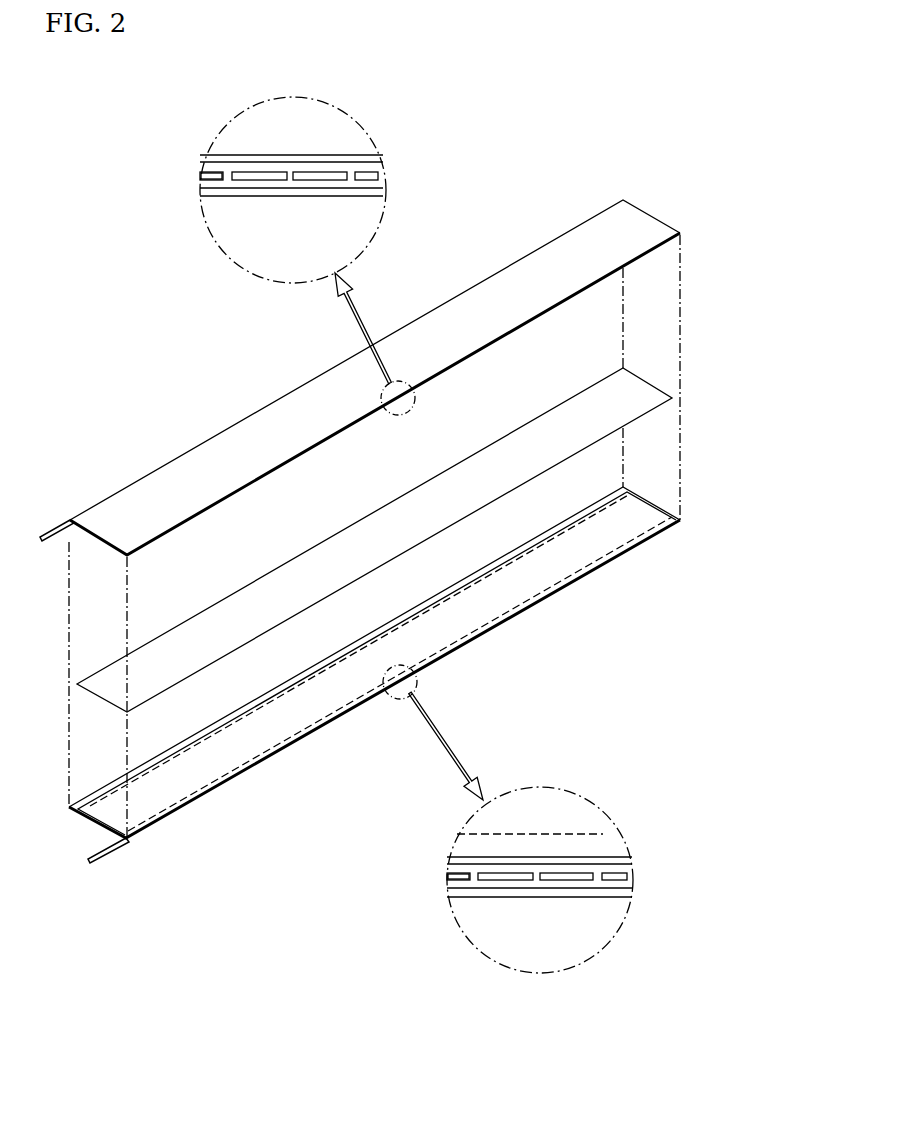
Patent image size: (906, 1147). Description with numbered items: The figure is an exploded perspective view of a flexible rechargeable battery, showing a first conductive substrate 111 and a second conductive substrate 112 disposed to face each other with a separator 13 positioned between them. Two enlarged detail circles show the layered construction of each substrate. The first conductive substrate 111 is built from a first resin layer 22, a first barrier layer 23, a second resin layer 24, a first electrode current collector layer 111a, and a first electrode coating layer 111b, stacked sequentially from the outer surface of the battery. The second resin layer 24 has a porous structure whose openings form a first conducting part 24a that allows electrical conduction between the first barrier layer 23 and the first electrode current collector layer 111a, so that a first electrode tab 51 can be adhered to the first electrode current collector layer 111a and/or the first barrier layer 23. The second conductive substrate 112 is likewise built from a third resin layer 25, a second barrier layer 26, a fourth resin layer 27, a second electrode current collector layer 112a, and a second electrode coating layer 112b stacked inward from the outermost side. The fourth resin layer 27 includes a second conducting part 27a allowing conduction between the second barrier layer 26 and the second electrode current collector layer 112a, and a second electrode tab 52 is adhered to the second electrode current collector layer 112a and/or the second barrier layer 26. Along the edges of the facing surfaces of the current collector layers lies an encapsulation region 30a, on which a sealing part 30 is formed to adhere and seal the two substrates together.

The first conductive substrate 111 is at (662, 206).
The first electrode current collector layer 111a is at (384, 187).
The first electrode coating layer 111b is at (380, 197).
The second conductive substrate 112 is at (696, 541).
The second electrode current collector layer 112a is at (632, 866).
The second electrode coating layer 112b is at (622, 860).
The separator 13 is at (666, 375).
The first resin layer 22 is at (207, 156).
The first barrier layer 23 is at (208, 167).
The second resin layer 24 is at (378, 175).
The first conducting part 24a is at (205, 181).
The third resin layer 25 is at (455, 895).
The second barrier layer 26 is at (453, 885).
The fourth resin layer 27 is at (634, 878).
The second conducting part 27a is at (472, 871).
The sealing part 30 is at (597, 832).
The encapsulation region 30a is at (607, 560).
The first electrode tab 51 is at (50, 537).
The second electrode tab 52 is at (97, 860).